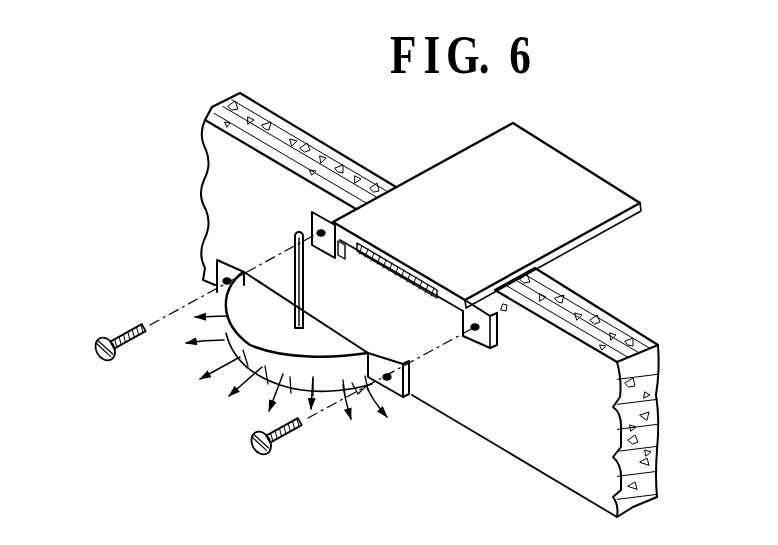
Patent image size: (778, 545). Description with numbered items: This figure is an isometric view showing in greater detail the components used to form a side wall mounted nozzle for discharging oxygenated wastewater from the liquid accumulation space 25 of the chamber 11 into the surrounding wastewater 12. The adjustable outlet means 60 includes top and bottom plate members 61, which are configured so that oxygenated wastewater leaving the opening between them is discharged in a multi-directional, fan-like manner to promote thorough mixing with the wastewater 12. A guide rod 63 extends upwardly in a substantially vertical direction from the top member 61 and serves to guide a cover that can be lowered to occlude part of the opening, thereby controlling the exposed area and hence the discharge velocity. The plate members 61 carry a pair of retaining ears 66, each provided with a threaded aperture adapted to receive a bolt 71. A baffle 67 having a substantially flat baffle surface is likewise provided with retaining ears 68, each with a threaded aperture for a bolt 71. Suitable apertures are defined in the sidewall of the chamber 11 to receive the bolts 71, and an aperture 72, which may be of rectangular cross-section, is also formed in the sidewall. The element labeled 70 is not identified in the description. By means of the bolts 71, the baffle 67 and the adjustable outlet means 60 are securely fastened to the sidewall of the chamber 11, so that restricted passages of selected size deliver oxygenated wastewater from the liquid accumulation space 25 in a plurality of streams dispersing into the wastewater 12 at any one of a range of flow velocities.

The chamber 11 is at (578, 459).
The wastewater 12 is at (151, 263).
The liquid accumulation space 25 is at (722, 240).
The adjustable outlet means 60 is at (197, 434).
The top and bottom plate members 61 is at (333, 346).
The guide rod 63 is at (294, 250).
The retaining ears 66 is at (233, 263).
The baffle 67 is at (513, 215).
The retaining ears 68 is at (334, 224).
The bracket flange 70 is at (411, 377).
The bolt 71 is at (112, 340).
The aperture 72 is at (407, 288).